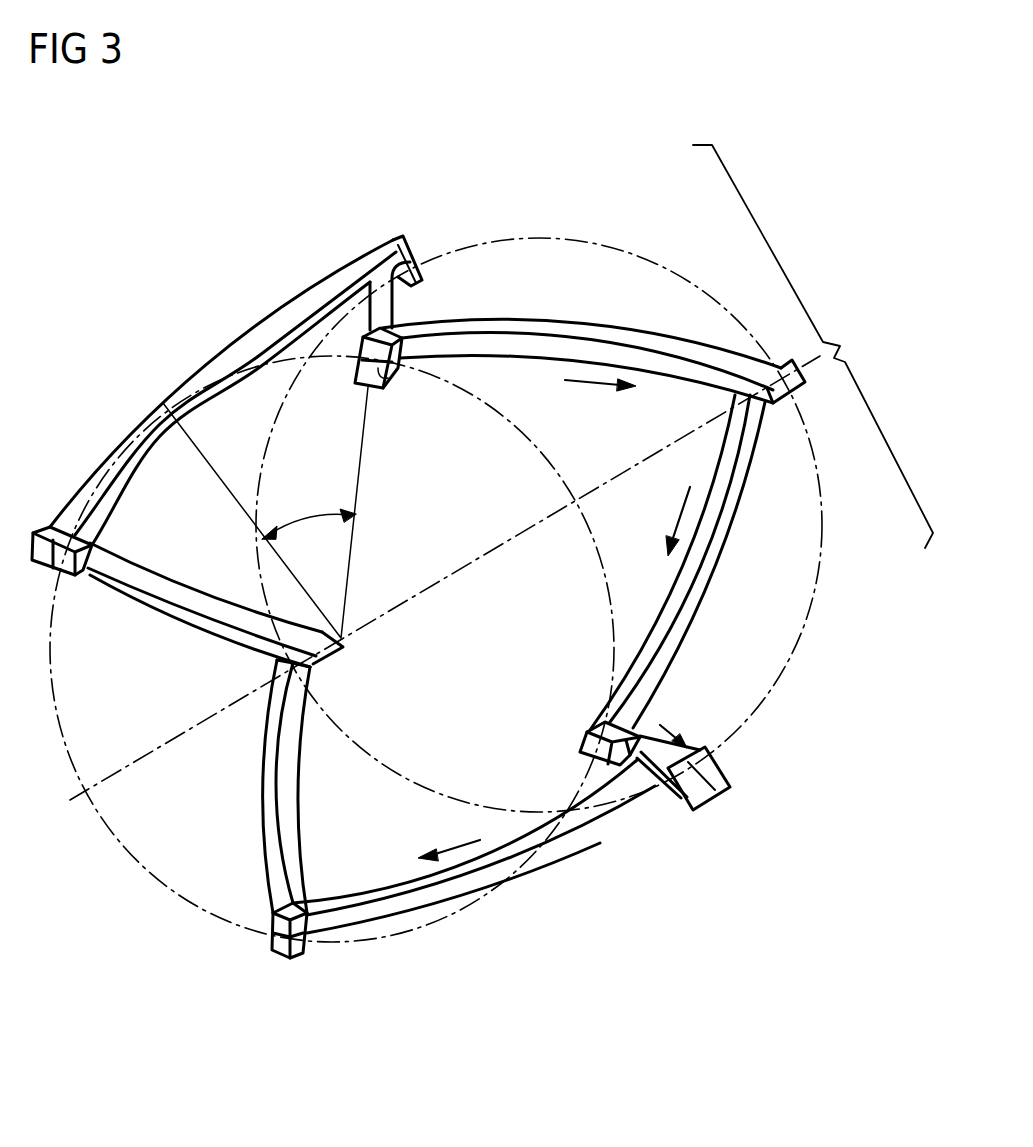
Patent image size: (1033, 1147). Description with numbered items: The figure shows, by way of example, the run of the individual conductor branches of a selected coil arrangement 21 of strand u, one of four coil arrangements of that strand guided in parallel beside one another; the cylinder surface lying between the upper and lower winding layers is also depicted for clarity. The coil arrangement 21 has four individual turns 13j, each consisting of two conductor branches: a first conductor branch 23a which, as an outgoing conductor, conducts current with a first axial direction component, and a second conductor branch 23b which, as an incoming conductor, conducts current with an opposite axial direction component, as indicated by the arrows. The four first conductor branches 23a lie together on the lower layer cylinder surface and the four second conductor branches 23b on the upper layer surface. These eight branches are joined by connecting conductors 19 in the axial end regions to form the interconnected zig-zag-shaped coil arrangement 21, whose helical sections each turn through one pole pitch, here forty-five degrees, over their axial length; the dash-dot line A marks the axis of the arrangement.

The coil arrangement 21 is at (175, 283).
The second conductor branch 23b is at (502, 326).
The first conductor branch 23a is at (678, 604).
The connecting conductor 19 is at (384, 390).
The turn 13j is at (813, 346).
The axis A is at (148, 752).